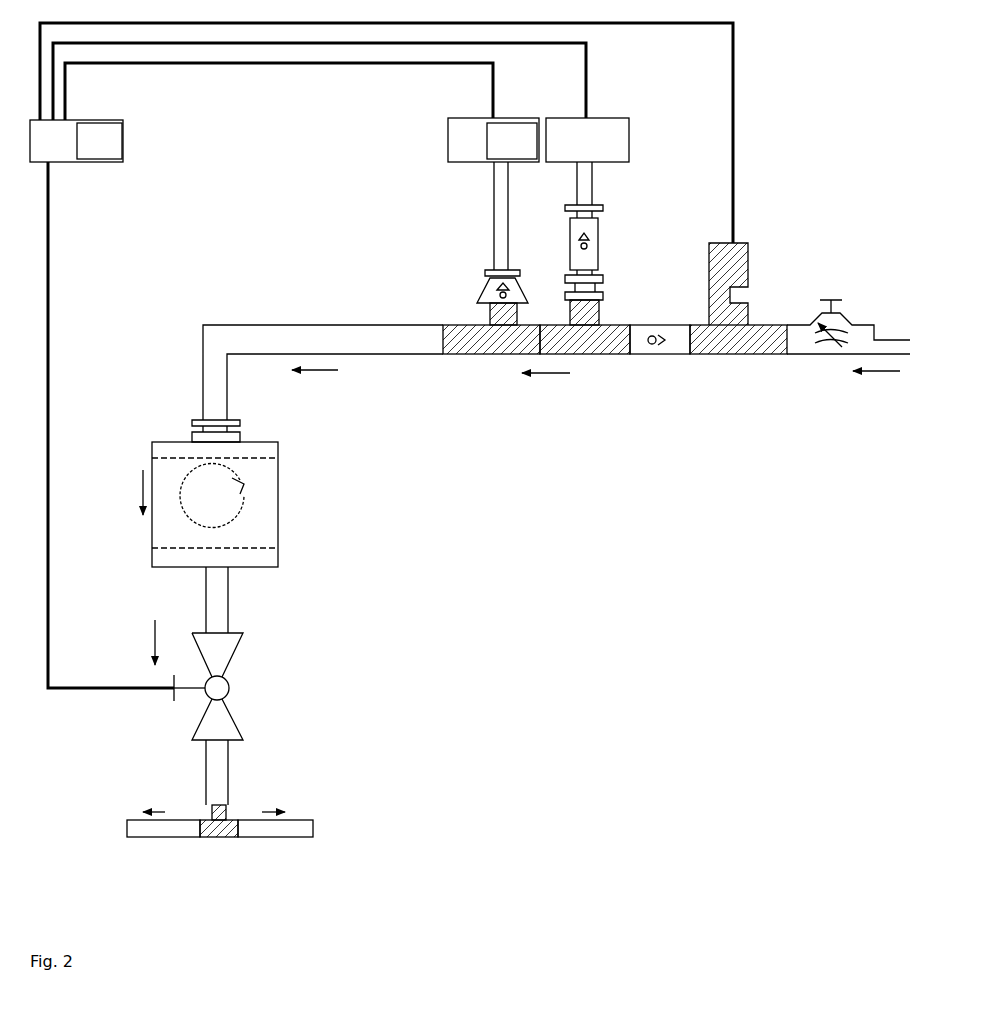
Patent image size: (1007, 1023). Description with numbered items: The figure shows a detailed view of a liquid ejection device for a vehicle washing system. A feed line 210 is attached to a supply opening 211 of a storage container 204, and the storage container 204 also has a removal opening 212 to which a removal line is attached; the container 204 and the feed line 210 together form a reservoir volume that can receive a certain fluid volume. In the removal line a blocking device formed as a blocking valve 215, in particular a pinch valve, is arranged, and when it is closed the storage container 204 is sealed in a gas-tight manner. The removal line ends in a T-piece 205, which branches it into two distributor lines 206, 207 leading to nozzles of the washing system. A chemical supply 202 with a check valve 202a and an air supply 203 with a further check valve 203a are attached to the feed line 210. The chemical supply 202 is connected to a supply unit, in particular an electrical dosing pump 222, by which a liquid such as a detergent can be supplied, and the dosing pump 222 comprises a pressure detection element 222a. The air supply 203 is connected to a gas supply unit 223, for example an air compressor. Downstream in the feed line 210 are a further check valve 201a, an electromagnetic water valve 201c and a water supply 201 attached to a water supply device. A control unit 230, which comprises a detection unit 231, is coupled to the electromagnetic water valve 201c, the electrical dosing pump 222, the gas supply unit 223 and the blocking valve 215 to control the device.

The water supply 201 is at (935, 310).
The further check valve 201a is at (652, 362).
The electromagnetic water valve 201c is at (752, 254).
The chemical supply 202 is at (488, 220).
The check valve 202a is at (468, 292).
The air supply 203 is at (573, 182).
The further check valve 203a is at (568, 260).
The storage container 204 is at (295, 498).
The T-piece 205 is at (220, 850).
The distributor line 206 is at (158, 850).
The distributor line 207 is at (274, 850).
The feed line 210 is at (238, 320).
The supply opening 211 is at (257, 432).
The removal opening 212 is at (240, 578).
The blocking valve 215 is at (245, 686).
The electrical dosing pump 222 is at (493, 140).
The pressure detection element 222a is at (512, 141).
The gas supply unit 223 is at (587, 140).
The control unit 230 is at (381, 362).
The detection unit 231 is at (99, 141).